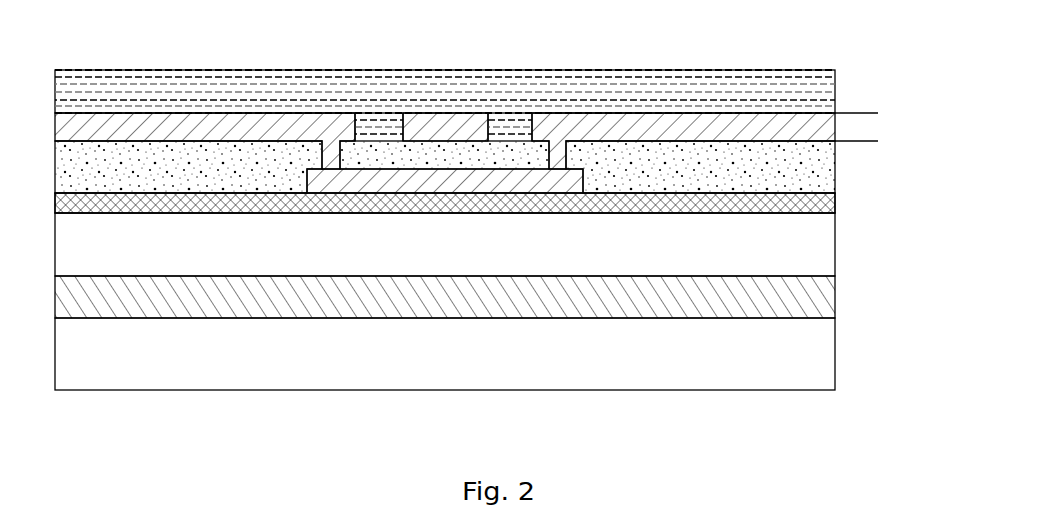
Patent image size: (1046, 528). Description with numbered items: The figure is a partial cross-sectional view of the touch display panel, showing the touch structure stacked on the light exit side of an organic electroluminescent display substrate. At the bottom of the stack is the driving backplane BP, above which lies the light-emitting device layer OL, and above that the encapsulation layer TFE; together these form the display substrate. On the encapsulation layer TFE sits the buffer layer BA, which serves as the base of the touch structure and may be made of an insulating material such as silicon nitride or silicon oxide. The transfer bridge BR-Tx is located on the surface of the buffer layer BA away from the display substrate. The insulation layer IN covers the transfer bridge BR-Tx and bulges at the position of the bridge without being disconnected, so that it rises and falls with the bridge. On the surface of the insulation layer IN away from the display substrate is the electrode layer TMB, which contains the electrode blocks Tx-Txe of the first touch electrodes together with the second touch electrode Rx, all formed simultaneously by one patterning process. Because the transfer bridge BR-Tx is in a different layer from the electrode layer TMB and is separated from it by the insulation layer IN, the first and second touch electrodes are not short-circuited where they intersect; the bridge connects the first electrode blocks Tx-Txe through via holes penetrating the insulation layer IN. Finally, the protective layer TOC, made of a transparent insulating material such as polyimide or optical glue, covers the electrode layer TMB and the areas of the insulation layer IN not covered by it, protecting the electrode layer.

The protective layer TOC is at (825, 92).
The electrode layer TMB is at (870, 88).
The insulation layer IN is at (825, 170).
The buffer layer BA is at (825, 202).
The encapsulation layer TFE is at (817, 255).
The light-emitting device layer OL is at (817, 303).
The driving backplane BP is at (817, 360).
The first electrode block of first touch electrode Tx-Txe is at (253, 127).
The second touch electrode Rx is at (448, 128).
The transfer bridge of first touch electrode BR-Tx is at (442, 180).